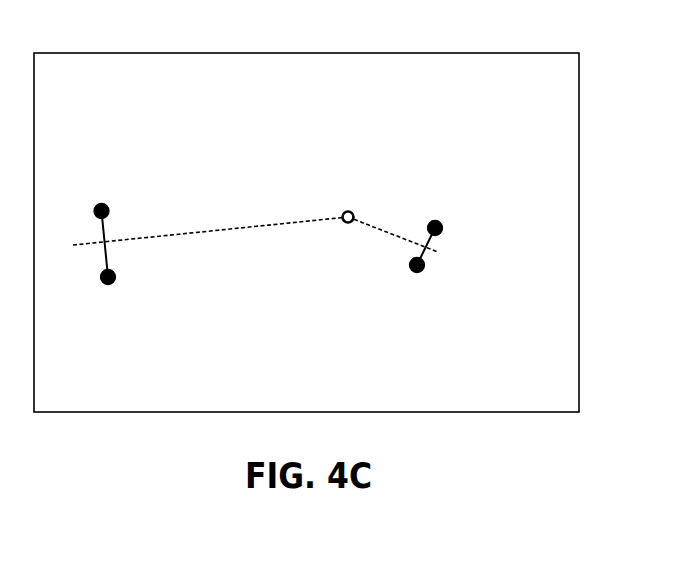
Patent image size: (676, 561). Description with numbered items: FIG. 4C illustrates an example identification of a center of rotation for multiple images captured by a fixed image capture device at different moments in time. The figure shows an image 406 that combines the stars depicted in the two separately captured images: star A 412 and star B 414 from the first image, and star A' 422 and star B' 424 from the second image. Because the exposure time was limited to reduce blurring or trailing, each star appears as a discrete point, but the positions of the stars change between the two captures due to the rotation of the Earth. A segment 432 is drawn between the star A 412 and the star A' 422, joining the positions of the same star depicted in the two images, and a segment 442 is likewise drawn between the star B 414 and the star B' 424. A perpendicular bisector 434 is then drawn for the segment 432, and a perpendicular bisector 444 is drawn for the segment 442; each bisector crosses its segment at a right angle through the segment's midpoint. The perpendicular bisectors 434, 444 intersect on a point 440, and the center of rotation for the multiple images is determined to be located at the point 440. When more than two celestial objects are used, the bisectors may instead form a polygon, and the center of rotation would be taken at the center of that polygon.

The image 406 is at (306, 210).
The point 440 is at (348, 210).
The perpendicular bisector 444 is at (199, 210).
The perpendicular bisector 434 is at (389, 205).
The segment 442 is at (83, 216).
The segment 432 is at (451, 275).
The star B 414 is at (120, 190).
The star B' 424 is at (107, 296).
The star A' 422 is at (446, 211).
The star A 412 is at (405, 287).